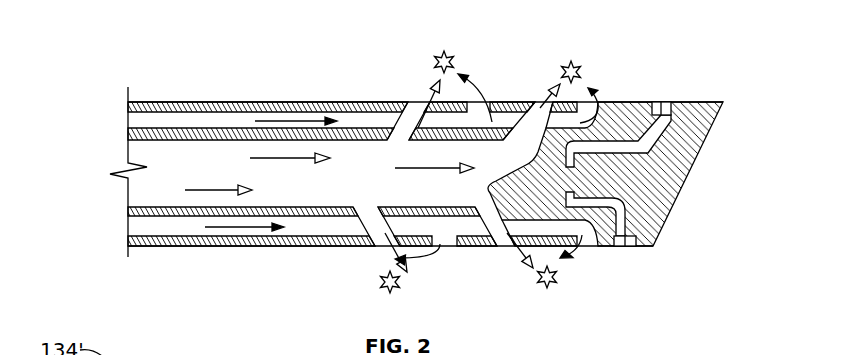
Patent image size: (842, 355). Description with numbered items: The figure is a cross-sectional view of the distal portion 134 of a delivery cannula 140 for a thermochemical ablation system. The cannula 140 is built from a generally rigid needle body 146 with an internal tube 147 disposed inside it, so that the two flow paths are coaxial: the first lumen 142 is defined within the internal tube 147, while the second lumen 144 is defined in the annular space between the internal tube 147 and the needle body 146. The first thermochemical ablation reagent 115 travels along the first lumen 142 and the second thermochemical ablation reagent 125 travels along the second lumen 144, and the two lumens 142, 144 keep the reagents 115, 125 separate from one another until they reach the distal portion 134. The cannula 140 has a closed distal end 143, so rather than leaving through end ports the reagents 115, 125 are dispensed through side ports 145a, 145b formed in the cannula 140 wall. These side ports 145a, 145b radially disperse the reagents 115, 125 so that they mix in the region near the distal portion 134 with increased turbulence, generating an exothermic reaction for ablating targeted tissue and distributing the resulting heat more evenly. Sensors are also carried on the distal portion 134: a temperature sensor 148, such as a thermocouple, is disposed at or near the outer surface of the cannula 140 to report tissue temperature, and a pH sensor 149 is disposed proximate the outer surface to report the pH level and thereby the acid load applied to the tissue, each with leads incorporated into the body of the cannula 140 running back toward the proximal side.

The distal portion 134 is at (110, 28).
The cannula 140 is at (228, 96).
The needle body 146 is at (128, 105).
The second lumen 144 is at (132, 124).
The internal tube 147 is at (128, 210).
The first lumen 142 is at (124, 151).
The first thermochemical ablation reagent 115 is at (211, 188).
The second thermochemical ablation reagent 125 is at (298, 119).
The closed distal end 143 is at (690, 172).
The temperature sensor 148 is at (667, 102).
The pH sensor 149 is at (627, 248).
The side port 145a is at (413, 101).
The side port 145b is at (490, 101).